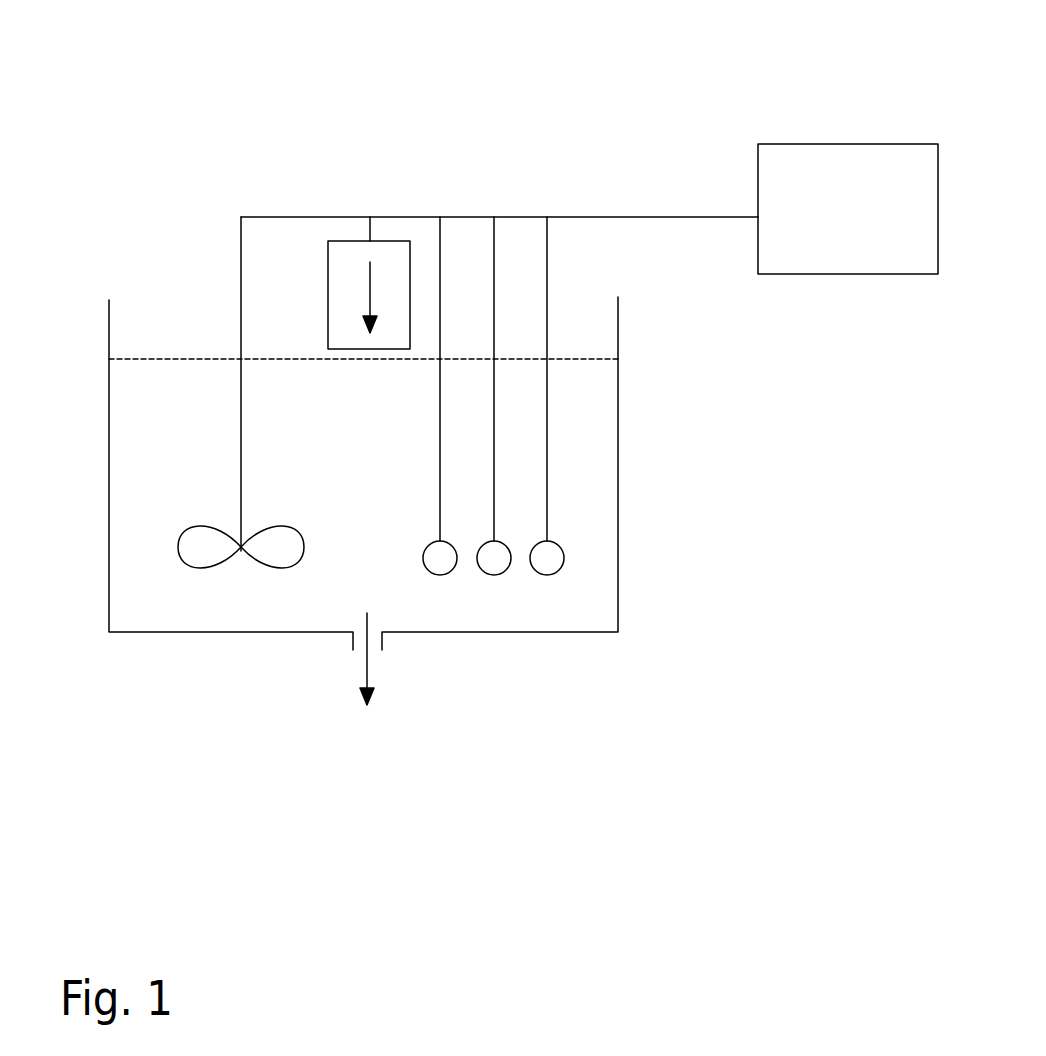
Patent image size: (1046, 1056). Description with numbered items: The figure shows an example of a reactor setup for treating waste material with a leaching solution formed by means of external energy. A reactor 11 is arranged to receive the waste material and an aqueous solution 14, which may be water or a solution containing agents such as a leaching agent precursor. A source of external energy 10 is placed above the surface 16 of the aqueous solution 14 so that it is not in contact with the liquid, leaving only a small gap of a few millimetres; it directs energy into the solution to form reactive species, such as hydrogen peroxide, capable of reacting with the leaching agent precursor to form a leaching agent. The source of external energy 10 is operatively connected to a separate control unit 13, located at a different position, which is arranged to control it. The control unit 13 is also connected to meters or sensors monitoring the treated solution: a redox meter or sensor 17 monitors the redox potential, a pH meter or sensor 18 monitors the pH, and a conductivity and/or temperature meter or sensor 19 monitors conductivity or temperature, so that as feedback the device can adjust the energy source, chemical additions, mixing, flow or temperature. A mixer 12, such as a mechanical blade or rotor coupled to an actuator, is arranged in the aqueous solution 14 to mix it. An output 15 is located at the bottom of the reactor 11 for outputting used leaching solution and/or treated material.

The source of external energy 10 is at (392, 253).
The reactor 11 is at (618, 540).
The mixer 12 is at (277, 550).
The control unit 13 is at (589, 209).
The aqueous solution 14 is at (369, 466).
The output 15 is at (368, 682).
The surface of the aqueous solution 16 is at (122, 358).
The redox meter or sensor 17 is at (440, 558).
The pH meter or sensor 18 is at (494, 558).
The conductivity meter or sensor and/or temperature meter or sensor 19 is at (547, 558).